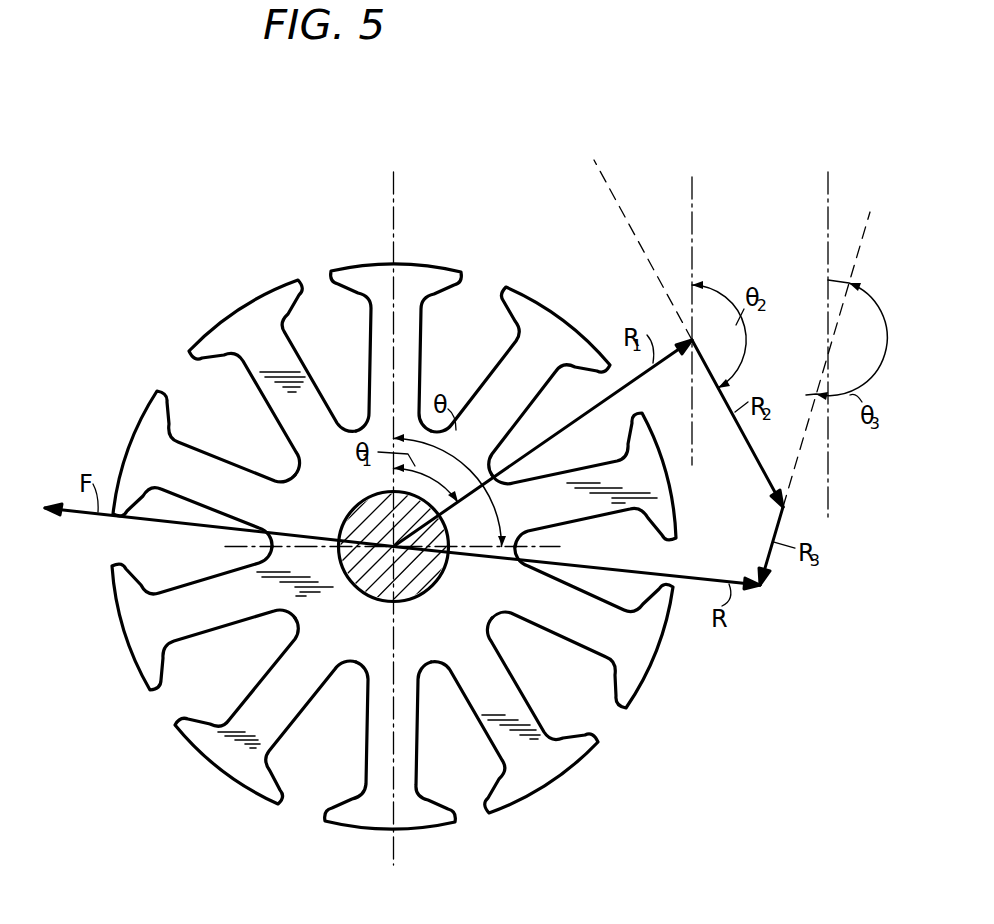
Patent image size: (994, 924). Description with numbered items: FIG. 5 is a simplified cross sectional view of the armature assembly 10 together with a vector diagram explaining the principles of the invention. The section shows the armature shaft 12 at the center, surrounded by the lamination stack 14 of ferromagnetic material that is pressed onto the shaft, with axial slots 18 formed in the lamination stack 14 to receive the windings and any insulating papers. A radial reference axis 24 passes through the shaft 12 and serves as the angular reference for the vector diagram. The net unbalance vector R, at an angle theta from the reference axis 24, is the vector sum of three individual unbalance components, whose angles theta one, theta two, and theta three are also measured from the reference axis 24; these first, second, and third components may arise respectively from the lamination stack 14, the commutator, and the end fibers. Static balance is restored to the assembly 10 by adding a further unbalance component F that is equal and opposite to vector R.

The armature assembly 10 is at (394, 531).
The armature shaft 12 is at (375, 580).
The lamination stack 14 is at (545, 770).
The axial slots 18 is at (177, 707).
The radial reference axis 24 is at (396, 226).